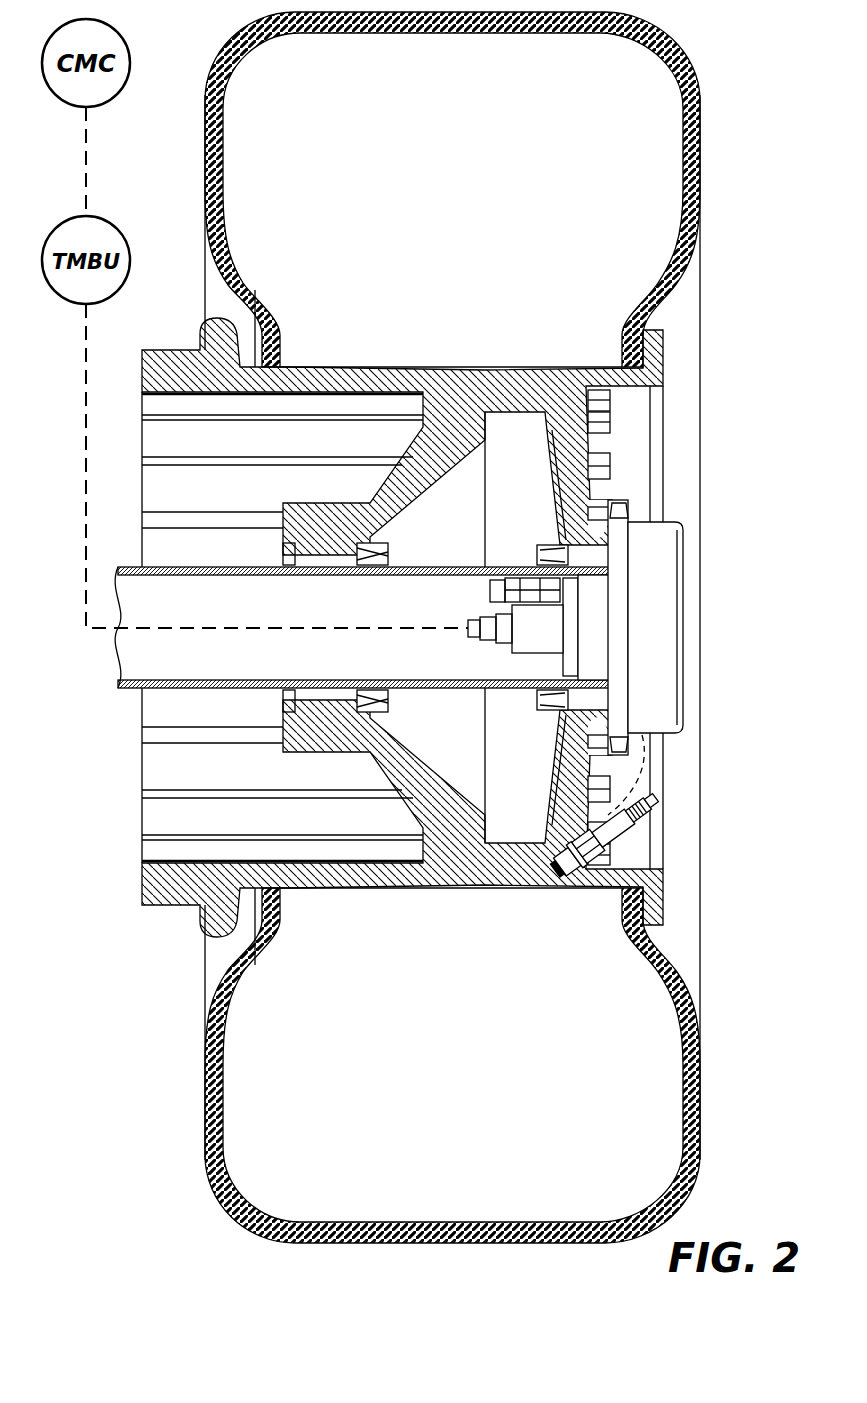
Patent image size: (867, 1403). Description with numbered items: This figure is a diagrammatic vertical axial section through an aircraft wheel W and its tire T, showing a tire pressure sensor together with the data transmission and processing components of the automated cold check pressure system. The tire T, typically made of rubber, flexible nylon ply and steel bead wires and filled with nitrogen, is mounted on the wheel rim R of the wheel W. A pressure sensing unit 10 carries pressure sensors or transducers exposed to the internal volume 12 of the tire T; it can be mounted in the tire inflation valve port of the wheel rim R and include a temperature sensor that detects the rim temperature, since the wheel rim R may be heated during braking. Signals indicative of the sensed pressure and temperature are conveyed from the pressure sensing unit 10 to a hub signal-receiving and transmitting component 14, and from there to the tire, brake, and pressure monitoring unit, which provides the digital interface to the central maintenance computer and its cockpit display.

The pressure sensing unit 10 is at (630, 839).
The internal volume 12 is at (487, 627).
The hub signal-receiving and transmitting component 14 is at (595, 617).
The aircraft wheel W is at (452, 627).
The wheel rim R is at (460, 897).
The tire T is at (701, 1006).